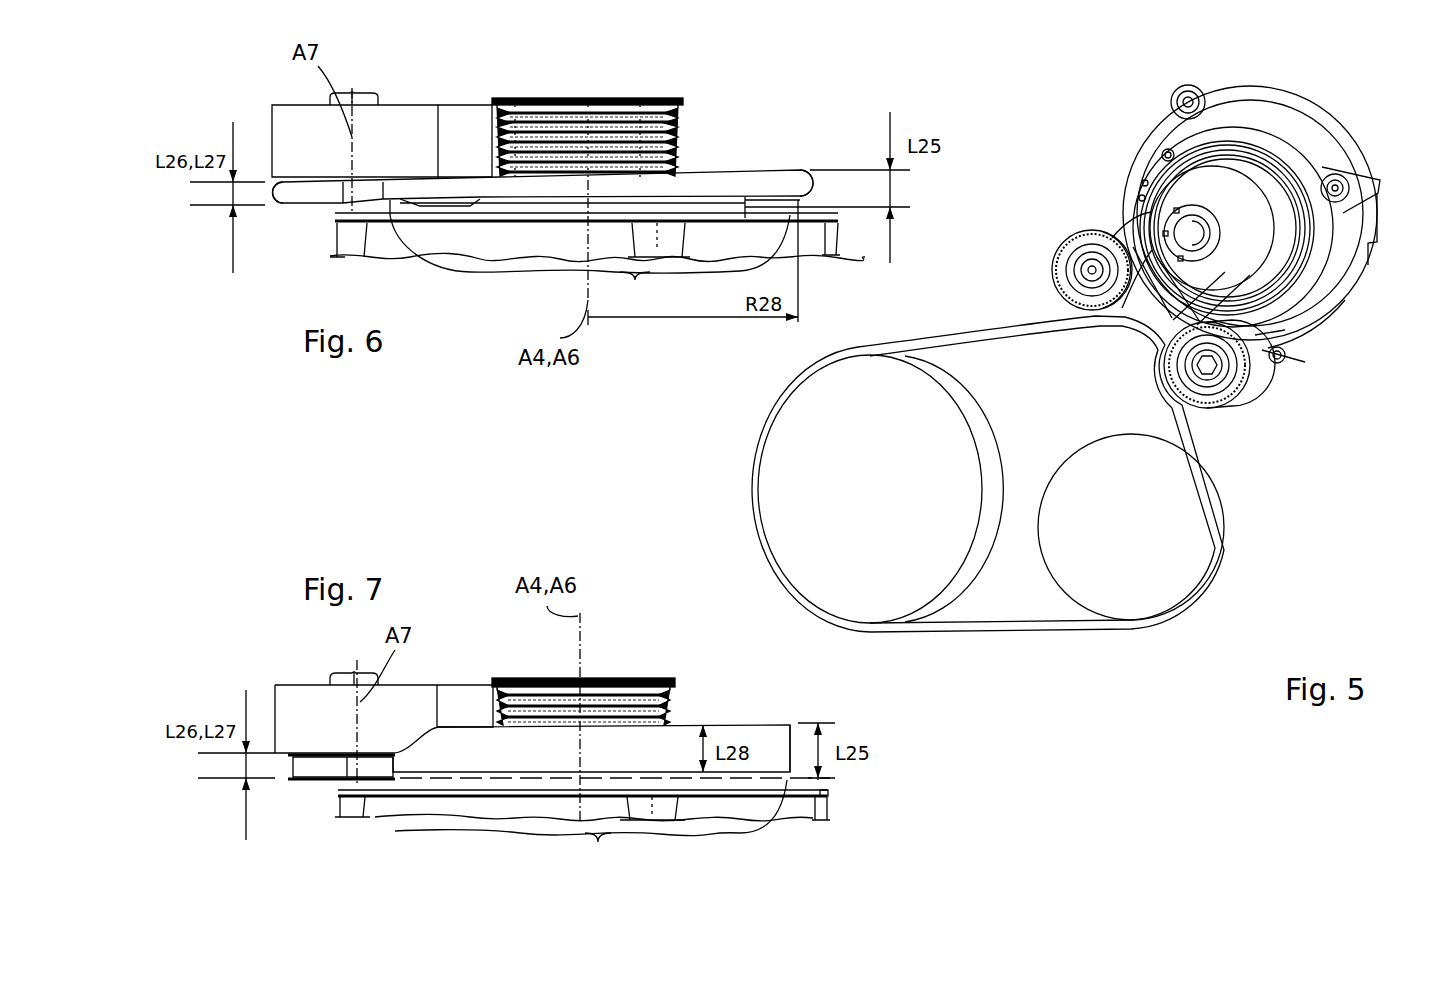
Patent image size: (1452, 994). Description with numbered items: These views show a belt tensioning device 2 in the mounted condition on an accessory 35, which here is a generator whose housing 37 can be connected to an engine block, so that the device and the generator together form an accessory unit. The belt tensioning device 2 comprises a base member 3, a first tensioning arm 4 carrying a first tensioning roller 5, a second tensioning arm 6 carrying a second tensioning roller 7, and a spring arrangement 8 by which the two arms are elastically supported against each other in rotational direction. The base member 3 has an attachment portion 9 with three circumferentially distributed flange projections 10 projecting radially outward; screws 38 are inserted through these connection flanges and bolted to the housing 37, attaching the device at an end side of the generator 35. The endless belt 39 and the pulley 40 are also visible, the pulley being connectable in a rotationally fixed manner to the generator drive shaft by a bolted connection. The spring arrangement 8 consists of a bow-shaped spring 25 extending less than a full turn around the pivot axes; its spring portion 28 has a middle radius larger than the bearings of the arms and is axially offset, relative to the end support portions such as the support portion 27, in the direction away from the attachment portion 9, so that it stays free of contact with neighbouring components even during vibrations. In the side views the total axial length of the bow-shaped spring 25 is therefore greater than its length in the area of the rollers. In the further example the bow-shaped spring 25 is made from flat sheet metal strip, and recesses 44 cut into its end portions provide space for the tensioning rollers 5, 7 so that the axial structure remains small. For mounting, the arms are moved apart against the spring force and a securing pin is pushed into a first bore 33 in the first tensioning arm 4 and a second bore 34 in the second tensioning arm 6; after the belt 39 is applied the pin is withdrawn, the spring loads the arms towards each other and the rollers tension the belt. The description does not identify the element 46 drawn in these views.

In FIG. 6, the belt tensioning device 2 is at (699, 84).
In FIG. 7, the belt tensioning device 2 is at (621, 616).
In FIG. 5, the belt tensioning device 2 is at (1242, 100).
In FIG. 6, the base member 3 is at (846, 223).
In FIG. 7, the base member 3 is at (822, 783).
In FIG. 5, the first tensioning arm 4 is at (1123, 218).
In FIG. 5, the first tensioning roller 5 is at (1066, 245).
In FIG. 5, the second tensioning arm 6 is at (1280, 332).
In FIG. 6, the second tensioning roller 7 is at (402, 113).
In FIG. 7, the second tensioning roller 7 is at (296, 693).
In FIG. 5, the second tensioning roller 7 is at (1242, 388).
In FIG. 6, the spring arrangement 8 is at (715, 150).
In FIG. 7, the spring arrangement 8 is at (743, 716).
In FIG. 5, the spring arrangement 8 is at (1280, 114).
In FIG. 7, the attachment portion 9 is at (830, 793).
In FIG. 5, the flange projections 10 is at (1342, 177).
In FIG. 6, the bow-shaped spring 25 is at (747, 165).
In FIG. 7, the bow-shaped spring 25 is at (690, 725).
In FIG. 6, the support portion of the bow-shaped spring 27 is at (307, 193).
In FIG. 7, the support portion of the bow-shaped spring 27 is at (308, 772).
In FIG. 6, the spring portion 28 is at (792, 180).
In FIG. 7, the spring portion 28 is at (778, 727).
In FIG. 5, the first bore 33 is at (1142, 180).
In FIG. 5, the second bore 34 is at (1166, 149).
In FIG. 6, the accessory 35 is at (388, 245).
In FIG. 7, the accessory 35 is at (354, 812).
In FIG. 5, the accessory 35 is at (1341, 127).
In FIG. 5, the housing 37 is at (1375, 228).
In FIG. 5, the screws 38 is at (1191, 86).
In FIG. 6, the belt 39 is at (466, 118).
In FIG. 7, the belt 39 is at (470, 700).
In FIG. 5, the belt 39 is at (1208, 475).
In FIG. 6, the pulley 40 is at (632, 98).
In FIG. 7, the pulley 40 is at (635, 688).
In FIG. 5, the pulley 40 is at (1210, 242).
In FIG. 7, the recesses 44 is at (327, 770).
In FIG. 6, the cover outline 46 is at (597, 257).
In FIG. 7, the cover outline 46 is at (594, 829).